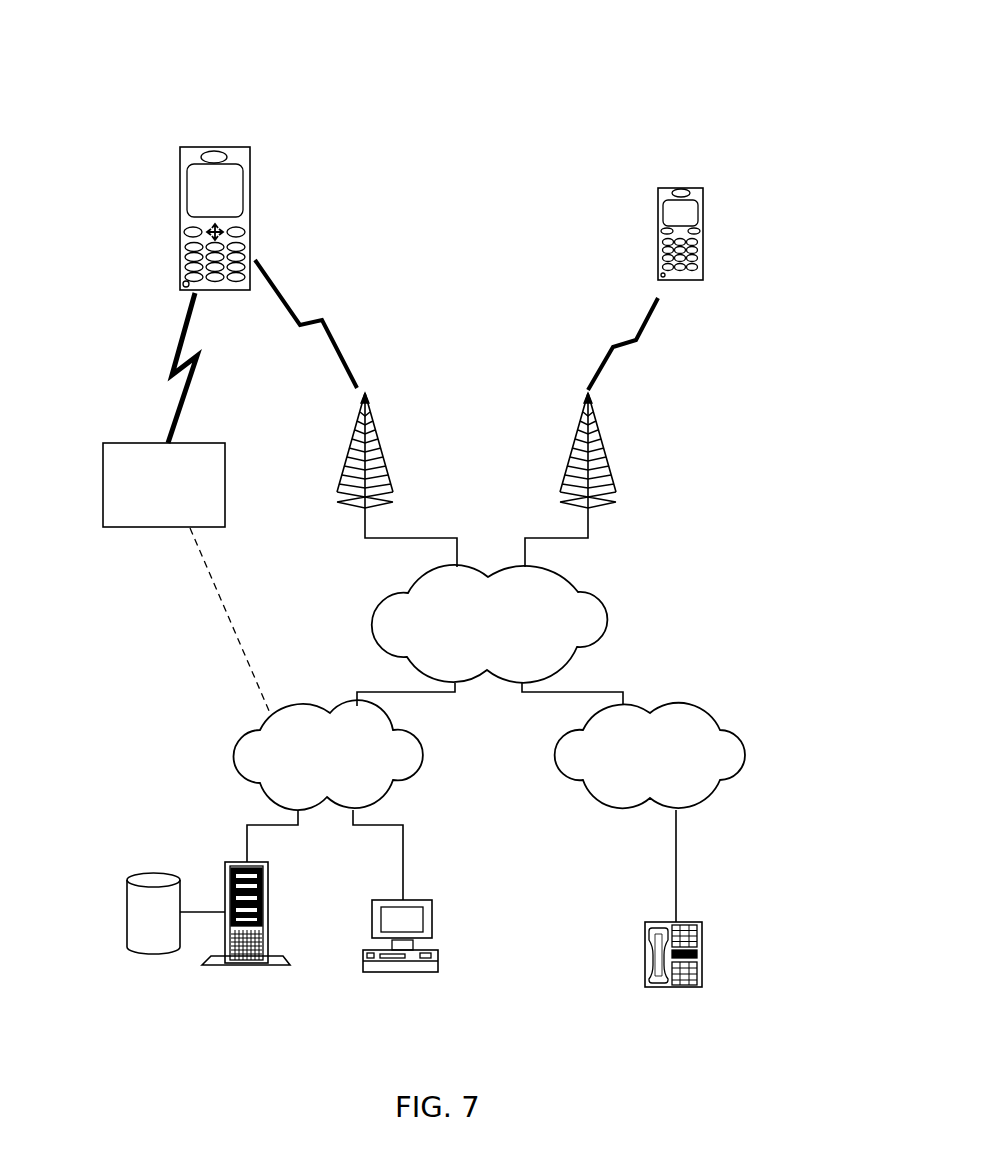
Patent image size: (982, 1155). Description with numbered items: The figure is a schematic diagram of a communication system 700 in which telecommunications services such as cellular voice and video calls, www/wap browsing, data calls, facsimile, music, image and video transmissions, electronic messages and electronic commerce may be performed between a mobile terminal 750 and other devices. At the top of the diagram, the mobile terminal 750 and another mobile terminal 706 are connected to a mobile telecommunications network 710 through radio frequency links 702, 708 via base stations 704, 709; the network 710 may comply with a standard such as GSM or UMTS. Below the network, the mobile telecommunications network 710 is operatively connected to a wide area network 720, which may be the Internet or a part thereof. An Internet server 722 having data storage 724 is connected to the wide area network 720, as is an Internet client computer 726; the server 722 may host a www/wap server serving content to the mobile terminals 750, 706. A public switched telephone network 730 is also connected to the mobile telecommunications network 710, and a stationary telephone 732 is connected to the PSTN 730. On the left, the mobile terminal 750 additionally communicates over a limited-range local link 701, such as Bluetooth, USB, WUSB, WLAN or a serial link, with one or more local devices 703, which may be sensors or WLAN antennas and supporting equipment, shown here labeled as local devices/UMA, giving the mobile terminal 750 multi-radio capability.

The communication system 700 is at (468, 72).
The mobile terminal 750 is at (178, 232).
The local link 701 is at (165, 366).
The radio frequency link 702 is at (308, 312).
The local devices 703 is at (131, 528).
The base station 704 is at (362, 448).
The mobile terminal 706 is at (672, 188).
The radio frequency link 708 is at (612, 337).
The base station 709 is at (578, 435).
The mobile telecommunications network 710 is at (373, 615).
The wide area network 720 is at (241, 733).
The Internet server 722 is at (222, 885).
The data storage 724 is at (147, 873).
The Internet client computer 726 is at (423, 900).
The public switched telephone network 730 is at (747, 757).
The stationary telephone 732 is at (645, 939).